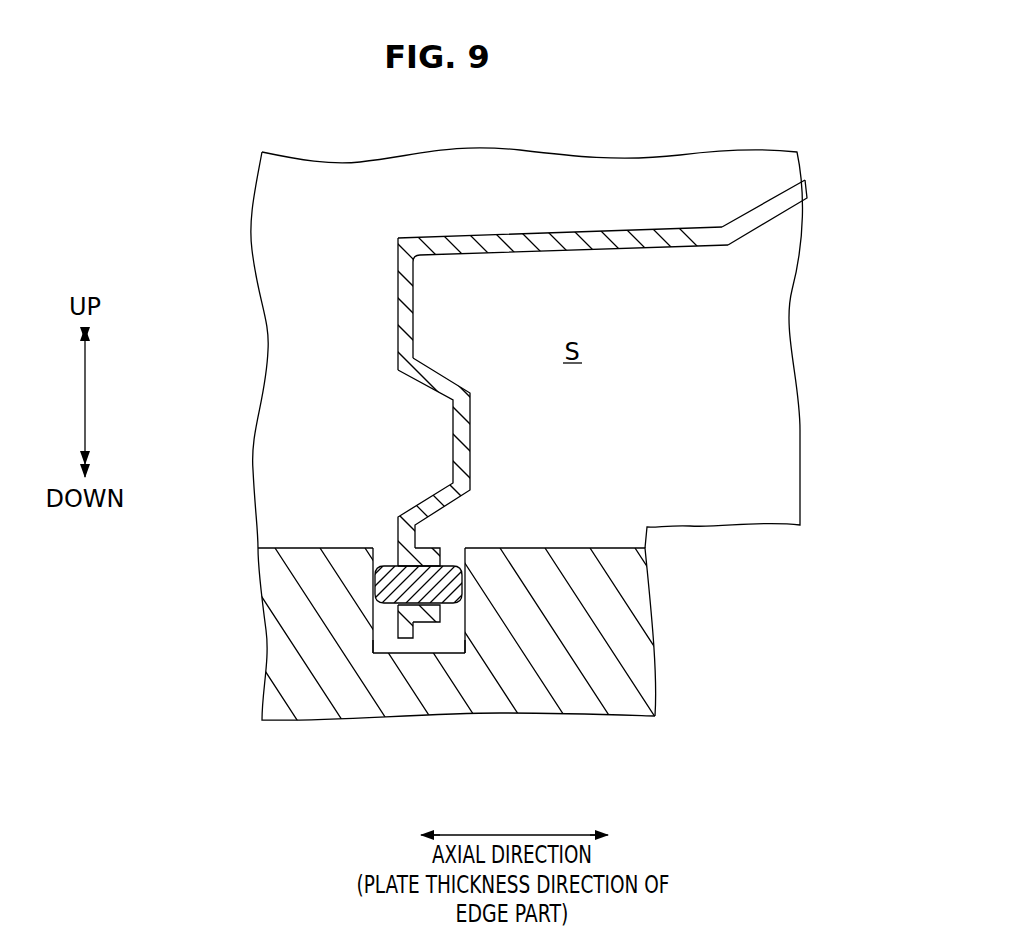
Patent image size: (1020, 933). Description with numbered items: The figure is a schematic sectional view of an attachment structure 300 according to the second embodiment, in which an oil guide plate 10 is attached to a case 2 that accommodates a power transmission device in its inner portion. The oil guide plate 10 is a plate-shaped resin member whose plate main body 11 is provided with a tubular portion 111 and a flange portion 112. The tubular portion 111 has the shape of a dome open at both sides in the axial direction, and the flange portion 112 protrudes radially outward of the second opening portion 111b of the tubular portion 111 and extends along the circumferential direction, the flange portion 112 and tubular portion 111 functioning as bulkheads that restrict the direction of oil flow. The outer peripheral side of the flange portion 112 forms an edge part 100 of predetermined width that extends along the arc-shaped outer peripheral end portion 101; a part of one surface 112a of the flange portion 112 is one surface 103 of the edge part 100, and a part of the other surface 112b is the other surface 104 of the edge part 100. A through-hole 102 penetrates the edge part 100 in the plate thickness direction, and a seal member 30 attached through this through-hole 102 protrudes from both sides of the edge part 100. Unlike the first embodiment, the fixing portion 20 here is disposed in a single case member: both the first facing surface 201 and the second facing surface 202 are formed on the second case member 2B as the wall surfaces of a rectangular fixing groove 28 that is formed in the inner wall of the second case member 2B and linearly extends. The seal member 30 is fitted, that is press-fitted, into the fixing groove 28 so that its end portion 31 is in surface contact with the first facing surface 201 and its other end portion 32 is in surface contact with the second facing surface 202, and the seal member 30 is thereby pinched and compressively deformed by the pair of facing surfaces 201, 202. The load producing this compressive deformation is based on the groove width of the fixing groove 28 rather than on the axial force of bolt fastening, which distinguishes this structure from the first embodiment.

The attachment structure 300 is at (308, 196).
The oil guide plate 10 is at (513, 335).
The plate main body 11 is at (768, 233).
The tubular portion 111 is at (591, 231).
The second opening portion 111b is at (398, 240).
The flange portion 112 is at (406, 304).
The surface of the flange portion 112a is at (398, 313).
The other surface of the flange portion 112b is at (413, 315).
The fixing portion 20 is at (473, 462).
The fixing groove 28 is at (456, 542).
The seal member 30 is at (422, 534).
The end portion of the seal member 31 is at (376, 588).
The other end portion of the seal member 32 is at (465, 577).
The edge part 100 is at (407, 641).
The outer peripheral end portion 101 is at (401, 640).
The through-hole 102 is at (392, 590).
The surface of the edge part 103 is at (396, 612).
The other surface of the edge part 104 is at (467, 613).
The second case member 2B is at (444, 604).
The case 2 is at (456, 634).
The first facing surface 201 is at (382, 642).
The second facing surface 202 is at (465, 641).